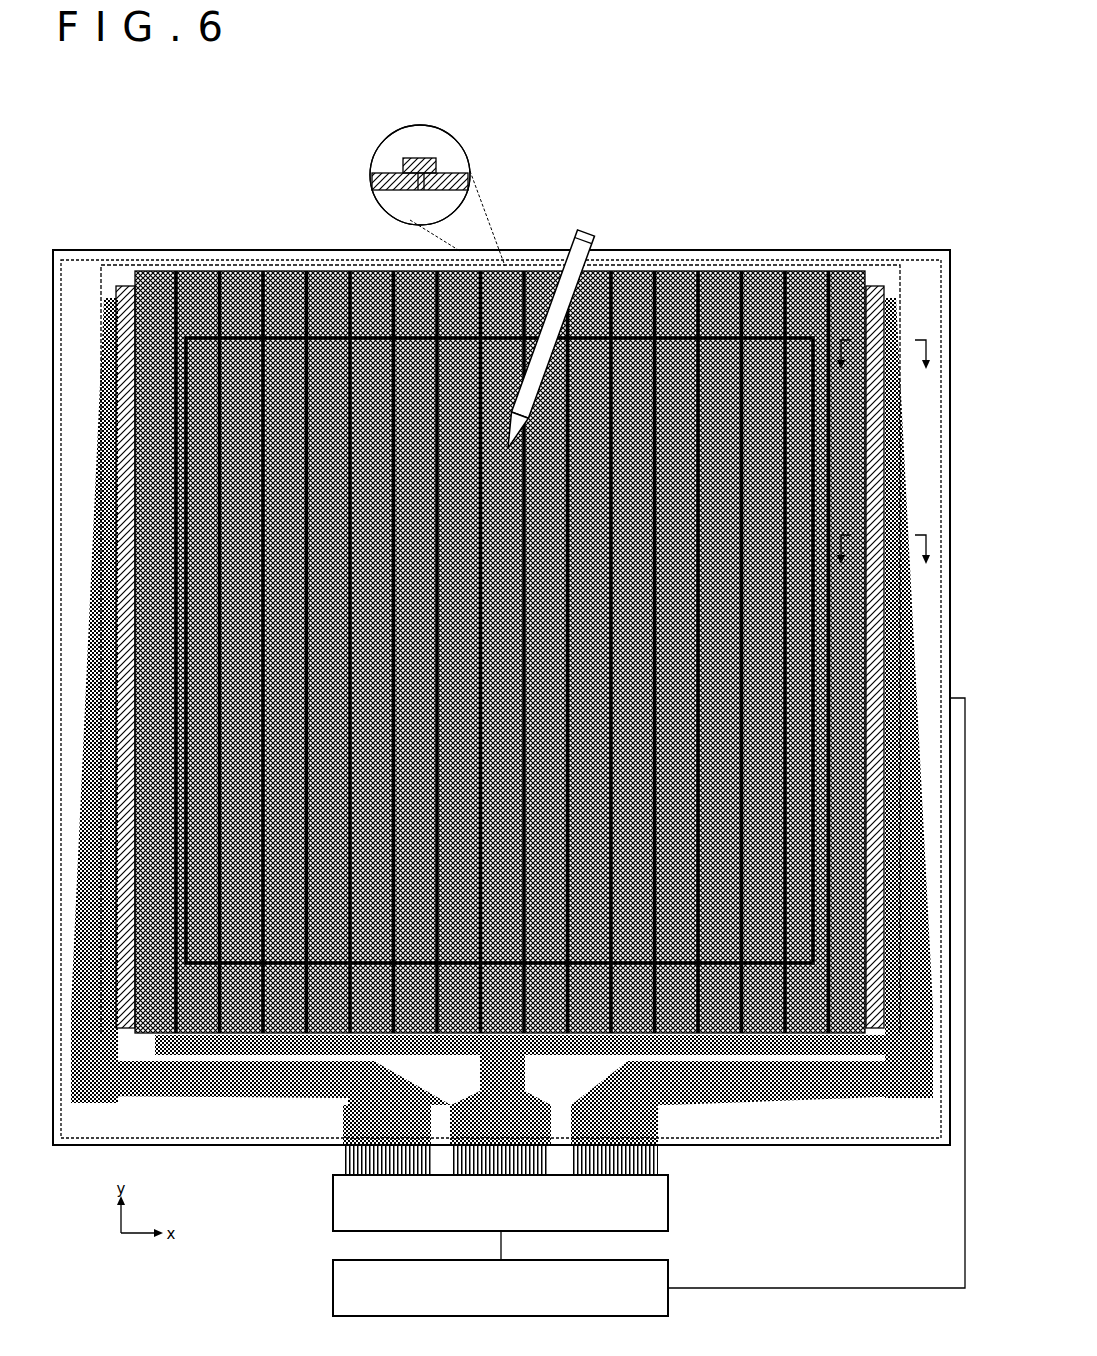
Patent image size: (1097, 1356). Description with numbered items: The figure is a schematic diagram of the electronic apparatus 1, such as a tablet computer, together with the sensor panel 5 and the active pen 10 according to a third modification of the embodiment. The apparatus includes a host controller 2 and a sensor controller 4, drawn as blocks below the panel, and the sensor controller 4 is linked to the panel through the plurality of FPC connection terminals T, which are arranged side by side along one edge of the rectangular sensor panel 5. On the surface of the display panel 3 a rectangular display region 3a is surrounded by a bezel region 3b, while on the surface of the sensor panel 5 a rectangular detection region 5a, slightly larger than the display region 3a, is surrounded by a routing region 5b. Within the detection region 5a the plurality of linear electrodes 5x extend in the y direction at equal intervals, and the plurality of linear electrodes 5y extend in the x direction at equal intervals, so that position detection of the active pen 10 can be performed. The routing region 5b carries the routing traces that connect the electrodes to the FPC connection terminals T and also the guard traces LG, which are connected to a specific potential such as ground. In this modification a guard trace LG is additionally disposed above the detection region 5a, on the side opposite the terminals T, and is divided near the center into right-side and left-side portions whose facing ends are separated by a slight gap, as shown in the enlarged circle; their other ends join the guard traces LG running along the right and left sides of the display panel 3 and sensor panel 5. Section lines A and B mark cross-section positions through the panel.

The electronic apparatus 1 is at (530, 172).
The host controller 2 is at (325, 1280).
The display panel 3 is at (820, 1140).
The display region 3a is at (369, 328).
The bezel region 3b is at (105, 256).
The sensor controller 4 is at (325, 1193).
The sensor panel 5 is at (878, 1140).
The detection region 5a is at (283, 266).
The routing region 5b is at (74, 256).
The linear electrodes 5x is at (845, 262).
The linear electrodes 5y is at (866, 275).
The active pen 10 is at (577, 216).
The FPC connection terminals T is at (333, 1120).
The guard trace LG is at (373, 162).
The section line A is at (884, 549).
The section line B is at (884, 354).